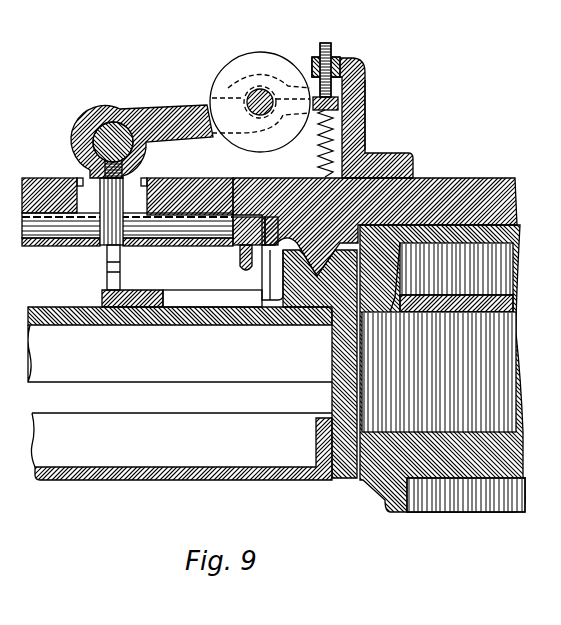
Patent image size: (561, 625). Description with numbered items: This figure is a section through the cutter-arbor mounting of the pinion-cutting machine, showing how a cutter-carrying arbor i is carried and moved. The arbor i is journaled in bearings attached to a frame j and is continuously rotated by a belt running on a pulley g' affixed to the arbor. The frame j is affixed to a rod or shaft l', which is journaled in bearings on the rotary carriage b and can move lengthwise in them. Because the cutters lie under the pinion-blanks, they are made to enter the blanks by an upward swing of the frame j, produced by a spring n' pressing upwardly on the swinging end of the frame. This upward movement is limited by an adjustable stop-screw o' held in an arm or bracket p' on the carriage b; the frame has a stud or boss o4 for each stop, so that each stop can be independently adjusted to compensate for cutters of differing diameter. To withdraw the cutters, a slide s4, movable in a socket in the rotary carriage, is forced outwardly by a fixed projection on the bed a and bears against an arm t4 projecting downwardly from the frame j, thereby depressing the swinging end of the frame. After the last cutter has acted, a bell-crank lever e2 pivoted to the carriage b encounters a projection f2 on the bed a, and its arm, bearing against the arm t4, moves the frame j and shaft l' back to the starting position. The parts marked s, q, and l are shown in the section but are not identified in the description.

The rotary carriage b is at (508, 204).
The bed a is at (306, 316).
The projection f2 is at (280, 280).
The slide s4 is at (180, 236).
The arm t4 is at (114, 248).
The bell-crank lever e2 is at (112, 268).
The screw s is at (238, 262).
The guide q is at (274, 262).
The frame j is at (153, 108).
The rod or shaft l' is at (280, 280).
The pulley g' is at (260, 83).
The cutter-carrying arbor i is at (253, 100).
The L-bracket l is at (280, 270).
The arm or bracket p' is at (381, 115).
The stop-screw o' is at (315, 52).
The stud or boss o4 is at (336, 100).
The spring n' is at (311, 143).